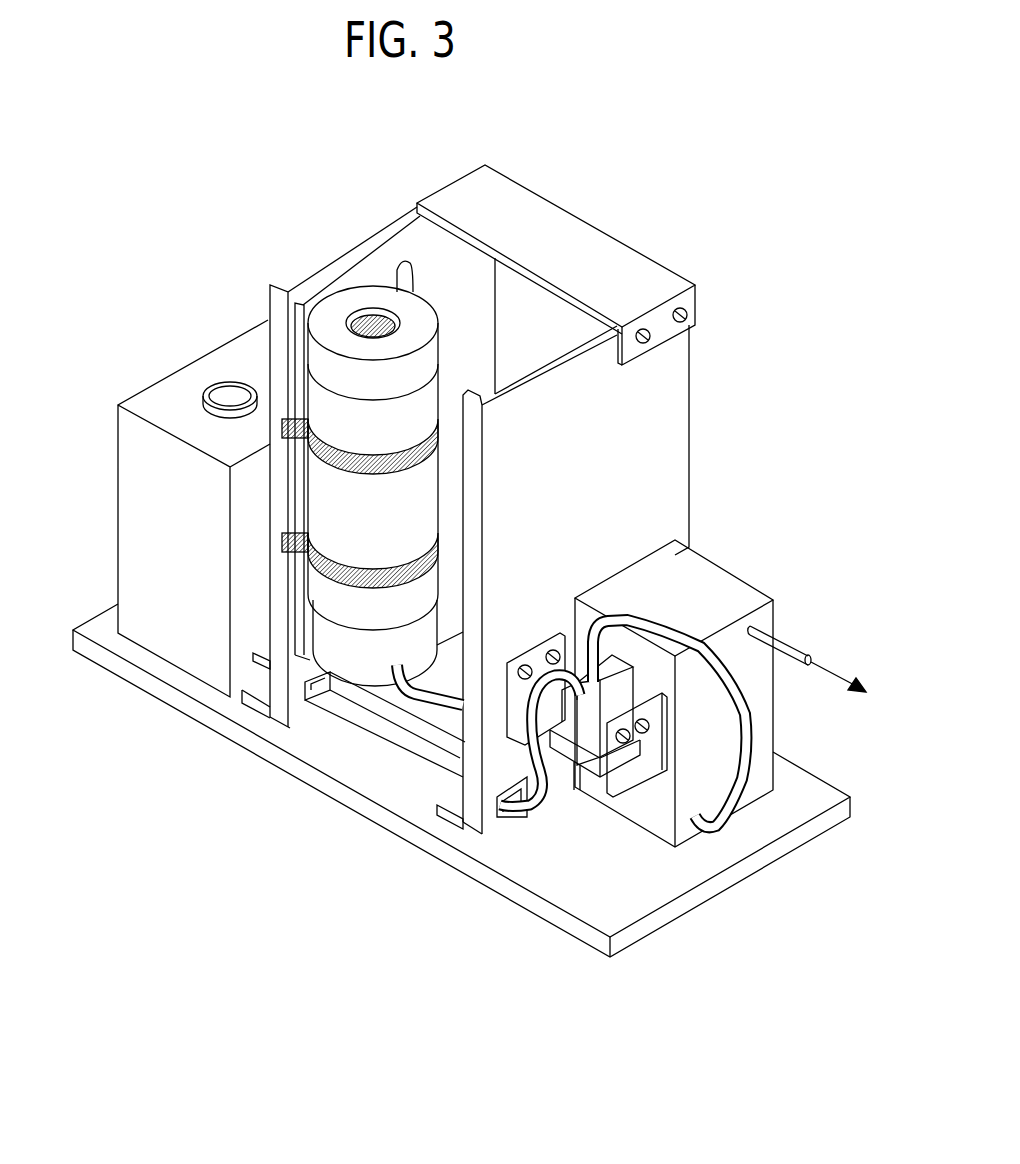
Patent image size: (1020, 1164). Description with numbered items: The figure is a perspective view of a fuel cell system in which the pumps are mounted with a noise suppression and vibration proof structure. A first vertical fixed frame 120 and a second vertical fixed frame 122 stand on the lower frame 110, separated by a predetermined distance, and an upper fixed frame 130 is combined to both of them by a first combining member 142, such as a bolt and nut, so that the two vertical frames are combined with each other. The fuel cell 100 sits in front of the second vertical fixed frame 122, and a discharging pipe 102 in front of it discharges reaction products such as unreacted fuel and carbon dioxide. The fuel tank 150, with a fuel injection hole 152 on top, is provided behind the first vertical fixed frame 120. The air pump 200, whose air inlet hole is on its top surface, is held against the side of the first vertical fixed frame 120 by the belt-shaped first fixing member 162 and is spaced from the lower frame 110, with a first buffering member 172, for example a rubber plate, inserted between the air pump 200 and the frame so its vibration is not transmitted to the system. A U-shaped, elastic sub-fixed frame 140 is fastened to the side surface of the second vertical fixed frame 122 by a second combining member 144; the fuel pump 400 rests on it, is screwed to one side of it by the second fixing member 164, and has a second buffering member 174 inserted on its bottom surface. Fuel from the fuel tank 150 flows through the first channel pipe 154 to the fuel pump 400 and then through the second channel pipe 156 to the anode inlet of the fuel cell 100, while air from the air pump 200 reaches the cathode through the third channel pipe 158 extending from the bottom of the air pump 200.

The fuel cell 100 is at (723, 555).
The discharging pipe 102 is at (790, 647).
The lower frame 110 is at (737, 876).
The first vertical fixed frame 120 is at (393, 230).
The second vertical fixed frame 122 is at (680, 413).
The upper fixed frame 130 is at (625, 250).
The sub-fixed frame 140 is at (653, 762).
The first combining member 142 is at (700, 308).
The second combining member 144 is at (525, 675).
The fuel tank 150 is at (159, 387).
The fuel injection hole 152 is at (227, 377).
The first channel pipe 154 is at (340, 715).
The second channel pipe 156 is at (752, 722).
The third channel pipe 158 is at (415, 693).
The first fixing member 162 is at (305, 558).
The second fixing member 164 is at (623, 741).
The first buffering member 172 is at (300, 498).
The second buffering member 174 is at (565, 748).
The air pump 200 is at (347, 295).
The fuel pump 400 is at (585, 760).